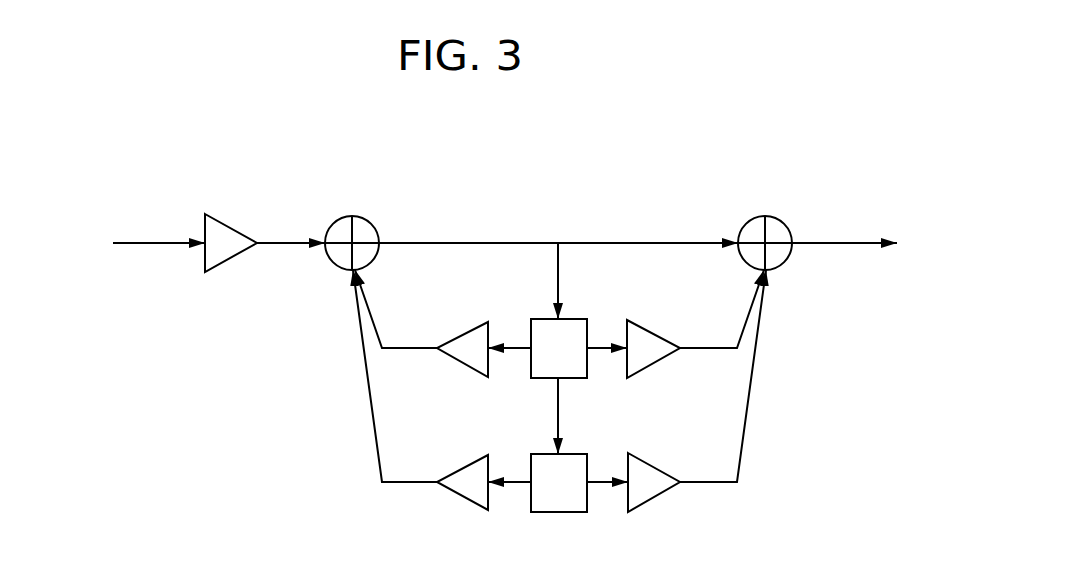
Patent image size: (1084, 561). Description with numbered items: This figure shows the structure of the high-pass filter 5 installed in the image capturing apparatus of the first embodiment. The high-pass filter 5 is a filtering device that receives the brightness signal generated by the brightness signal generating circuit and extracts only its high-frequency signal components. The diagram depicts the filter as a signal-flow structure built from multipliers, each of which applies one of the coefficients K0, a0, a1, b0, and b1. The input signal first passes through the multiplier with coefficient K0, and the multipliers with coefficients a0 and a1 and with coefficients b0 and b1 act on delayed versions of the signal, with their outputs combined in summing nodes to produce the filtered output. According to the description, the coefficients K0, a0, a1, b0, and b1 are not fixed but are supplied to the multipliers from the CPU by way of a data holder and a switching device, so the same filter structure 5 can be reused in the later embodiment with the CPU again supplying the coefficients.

The high-pass filter 5 is at (656, 203).
The coefficient K0 is at (231, 243).
The coefficient a0 is at (462, 349).
The coefficient a1 is at (462, 482).
The coefficient b0 is at (653, 349).
The coefficient b1 is at (654, 482).